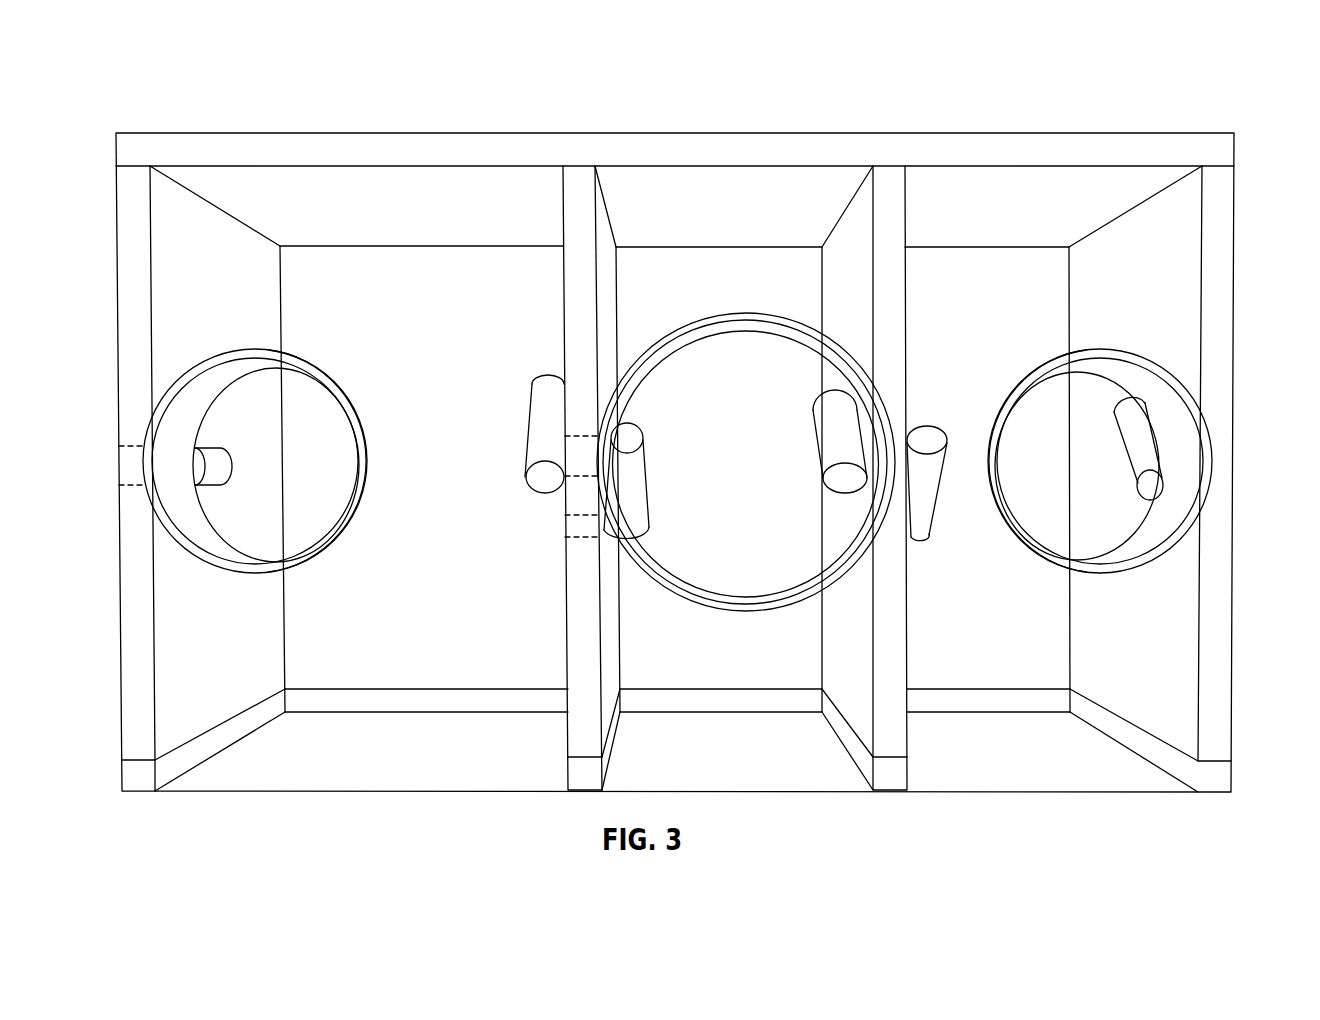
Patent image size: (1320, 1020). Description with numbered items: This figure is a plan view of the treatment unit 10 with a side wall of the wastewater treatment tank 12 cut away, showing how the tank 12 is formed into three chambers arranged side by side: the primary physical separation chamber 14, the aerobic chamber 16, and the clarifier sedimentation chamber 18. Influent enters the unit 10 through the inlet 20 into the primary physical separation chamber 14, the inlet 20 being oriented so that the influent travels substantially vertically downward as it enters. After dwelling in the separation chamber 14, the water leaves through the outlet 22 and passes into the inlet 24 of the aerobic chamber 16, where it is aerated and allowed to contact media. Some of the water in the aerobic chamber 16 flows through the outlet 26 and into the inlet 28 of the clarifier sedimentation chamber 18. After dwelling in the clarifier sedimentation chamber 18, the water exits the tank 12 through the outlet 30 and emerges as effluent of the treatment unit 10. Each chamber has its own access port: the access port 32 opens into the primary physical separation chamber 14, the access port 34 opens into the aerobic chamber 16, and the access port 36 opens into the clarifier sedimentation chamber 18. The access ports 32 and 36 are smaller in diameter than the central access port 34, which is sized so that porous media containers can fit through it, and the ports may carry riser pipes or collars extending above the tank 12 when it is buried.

The treatment unit 10 is at (1134, 42).
The wastewater treatment tank 12 is at (1226, 150).
The primary physical separation chamber 14 is at (386, 226).
The aerobic chamber 16 is at (657, 236).
The clarifier sedimentation chamber 18 is at (978, 236).
The inlet 20 is at (217, 448).
The outlet 22 is at (542, 428).
The inlet 24 is at (633, 500).
The outlet 26 is at (827, 428).
The inlet 28 is at (908, 541).
The outlet 30 is at (1153, 450).
The access port 32 is at (384, 460).
The access port 34 is at (740, 605).
The access port 36 is at (1180, 418).